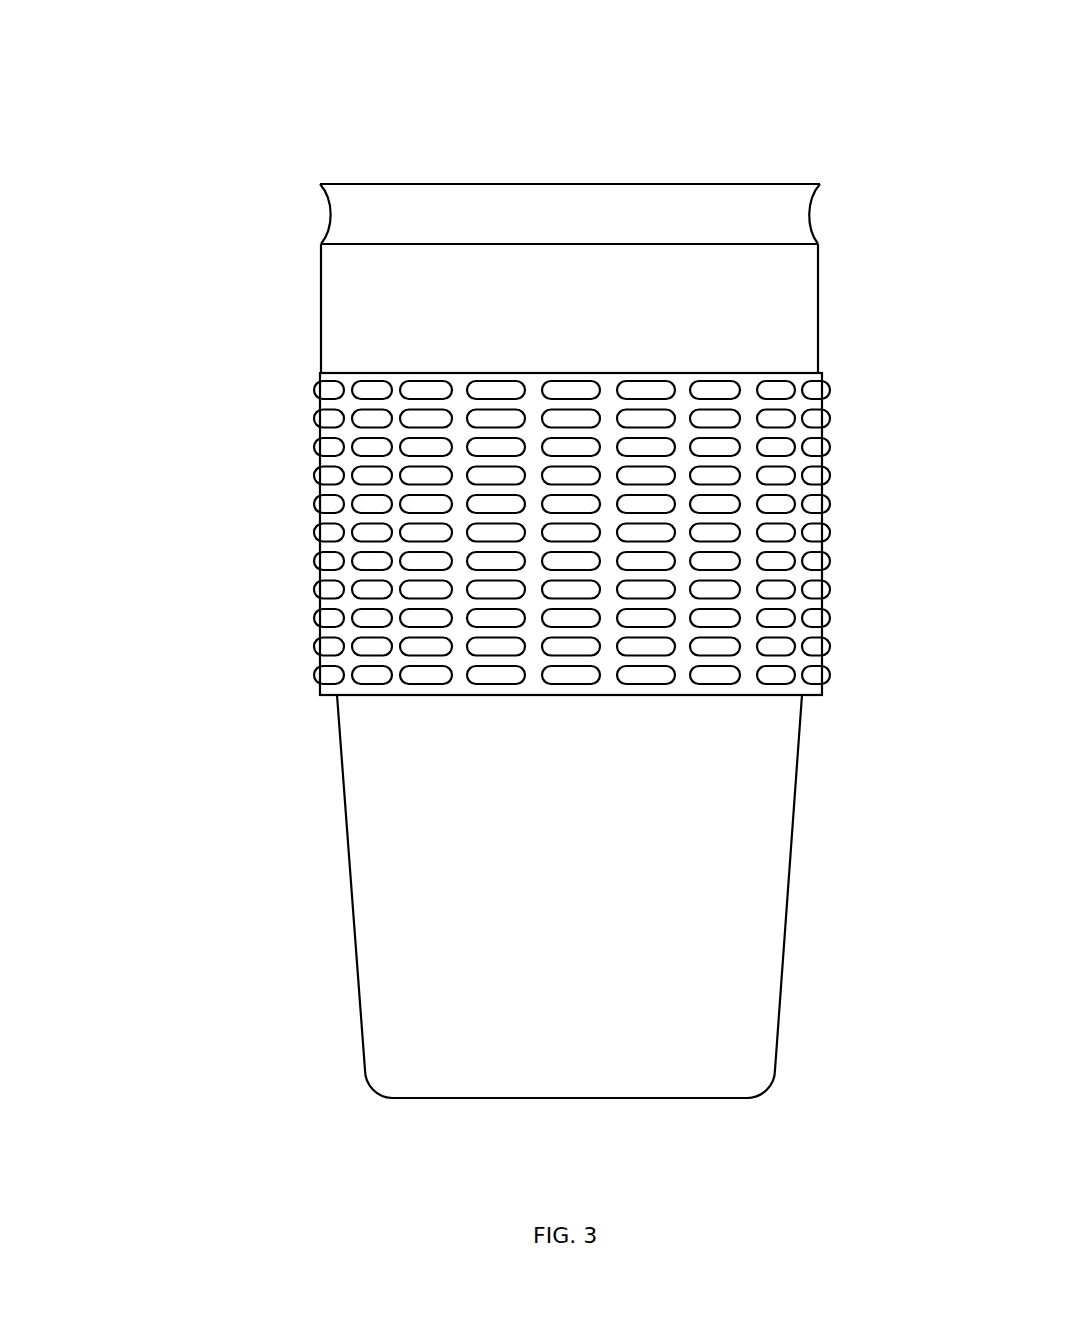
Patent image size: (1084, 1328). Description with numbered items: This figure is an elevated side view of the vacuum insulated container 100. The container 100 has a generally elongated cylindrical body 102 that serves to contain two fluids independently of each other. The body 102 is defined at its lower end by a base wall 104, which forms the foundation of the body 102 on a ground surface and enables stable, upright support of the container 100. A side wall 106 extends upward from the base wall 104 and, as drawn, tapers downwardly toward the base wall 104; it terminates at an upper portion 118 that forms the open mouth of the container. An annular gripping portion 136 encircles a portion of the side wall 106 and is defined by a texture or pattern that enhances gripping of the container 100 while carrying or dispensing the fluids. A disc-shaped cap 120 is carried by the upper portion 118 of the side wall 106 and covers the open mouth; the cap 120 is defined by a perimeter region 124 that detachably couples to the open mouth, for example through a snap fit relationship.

The container 100 is at (136, 93).
The body 102 is at (320, 877).
The base wall 104 is at (583, 1104).
The side wall 106 is at (584, 876).
The upper portion 118 is at (320, 285).
The cap 120 is at (840, 213).
The perimeter region 124 is at (821, 186).
The gripping portion 136 is at (320, 525).